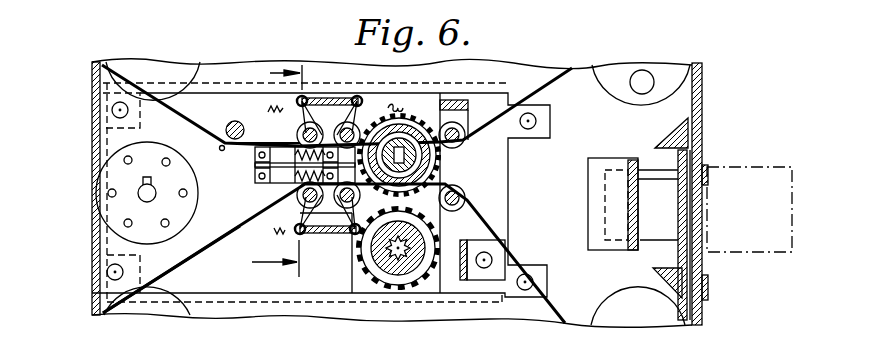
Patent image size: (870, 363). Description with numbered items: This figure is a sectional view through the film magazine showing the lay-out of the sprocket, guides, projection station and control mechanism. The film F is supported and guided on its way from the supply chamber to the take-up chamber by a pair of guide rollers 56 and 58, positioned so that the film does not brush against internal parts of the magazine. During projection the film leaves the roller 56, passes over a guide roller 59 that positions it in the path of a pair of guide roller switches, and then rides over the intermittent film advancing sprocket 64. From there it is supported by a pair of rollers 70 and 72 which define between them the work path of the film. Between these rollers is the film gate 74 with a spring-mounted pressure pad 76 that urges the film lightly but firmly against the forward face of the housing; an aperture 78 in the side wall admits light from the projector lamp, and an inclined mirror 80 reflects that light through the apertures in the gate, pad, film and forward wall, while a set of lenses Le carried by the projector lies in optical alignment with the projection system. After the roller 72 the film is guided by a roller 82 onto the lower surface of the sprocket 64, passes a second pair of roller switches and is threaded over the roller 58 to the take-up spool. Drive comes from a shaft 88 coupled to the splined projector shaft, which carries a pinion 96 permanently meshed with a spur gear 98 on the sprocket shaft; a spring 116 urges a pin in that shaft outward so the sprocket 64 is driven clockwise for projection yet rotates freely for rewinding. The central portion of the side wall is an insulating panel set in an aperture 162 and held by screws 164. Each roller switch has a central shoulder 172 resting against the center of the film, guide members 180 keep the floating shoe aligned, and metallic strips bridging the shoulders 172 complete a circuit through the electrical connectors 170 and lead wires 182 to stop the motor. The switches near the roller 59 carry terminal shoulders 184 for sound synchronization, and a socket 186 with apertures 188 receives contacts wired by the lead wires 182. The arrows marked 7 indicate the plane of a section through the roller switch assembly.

The guide roller 56 is at (123, 70).
The guide roller 58 is at (162, 308).
The guide roller 59 is at (233, 120).
The intermittent film advancing sprocket 64 is at (440, 162).
The roller 70 is at (672, 82).
The roller 72 is at (662, 318).
The film gate 74 is at (688, 135).
The pressure pad 76 is at (686, 158).
The aperture 78 is at (655, 238).
The inclined mirror 80 is at (641, 160).
The roller 82 is at (466, 198).
The shaft 88 is at (413, 278).
The pinion 96 is at (380, 283).
The spur gear 98 is at (399, 117).
The spring 116 is at (432, 228).
The aperture 162 is at (213, 293).
The screws 164 is at (111, 110).
The electrical connectors 170 is at (327, 225).
The central shoulder 172 is at (238, 226).
The guide members 180 is at (257, 188).
The lead wires 182 is at (266, 240).
The terminal shoulders 184 is at (355, 98).
The socket 186 is at (90, 192).
The apertures 188 is at (124, 159).
The film F is at (190, 118).
The set of lenses Le is at (774, 172).
The section line 7 is at (285, 171).